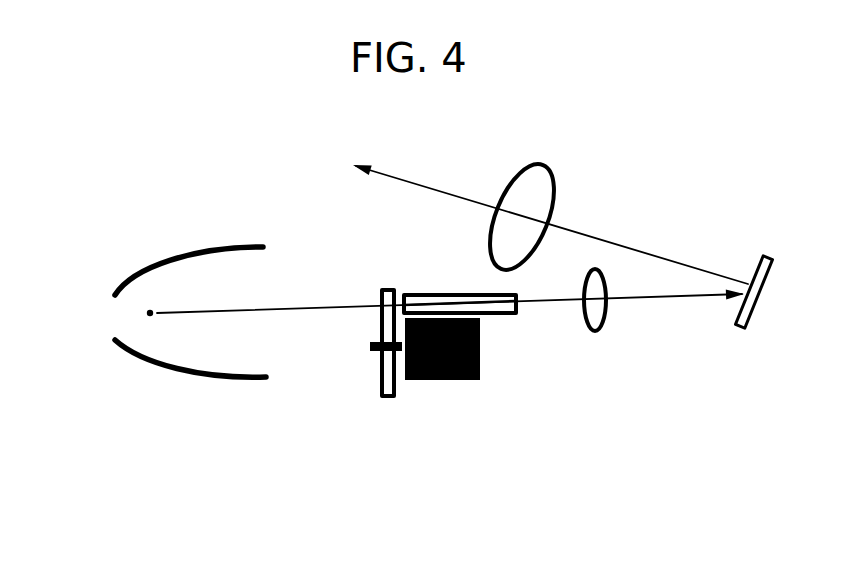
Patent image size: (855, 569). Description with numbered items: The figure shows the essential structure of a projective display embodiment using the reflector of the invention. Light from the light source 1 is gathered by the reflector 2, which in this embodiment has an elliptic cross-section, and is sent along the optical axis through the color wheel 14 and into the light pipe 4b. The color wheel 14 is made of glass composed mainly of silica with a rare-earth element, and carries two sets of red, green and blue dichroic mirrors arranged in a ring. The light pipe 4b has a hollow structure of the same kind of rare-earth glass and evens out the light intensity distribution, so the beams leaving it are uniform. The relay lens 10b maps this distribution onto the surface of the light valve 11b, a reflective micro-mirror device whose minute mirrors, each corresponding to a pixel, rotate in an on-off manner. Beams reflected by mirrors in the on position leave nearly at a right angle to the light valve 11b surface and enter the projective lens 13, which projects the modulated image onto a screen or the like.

The light source 1 is at (138, 311).
The reflector 2 is at (155, 262).
The light pipe 4b is at (488, 316).
The relay lens 10b is at (603, 333).
The light valve 11b is at (760, 253).
The projective lens 13 is at (537, 162).
The color wheel 14 is at (386, 399).